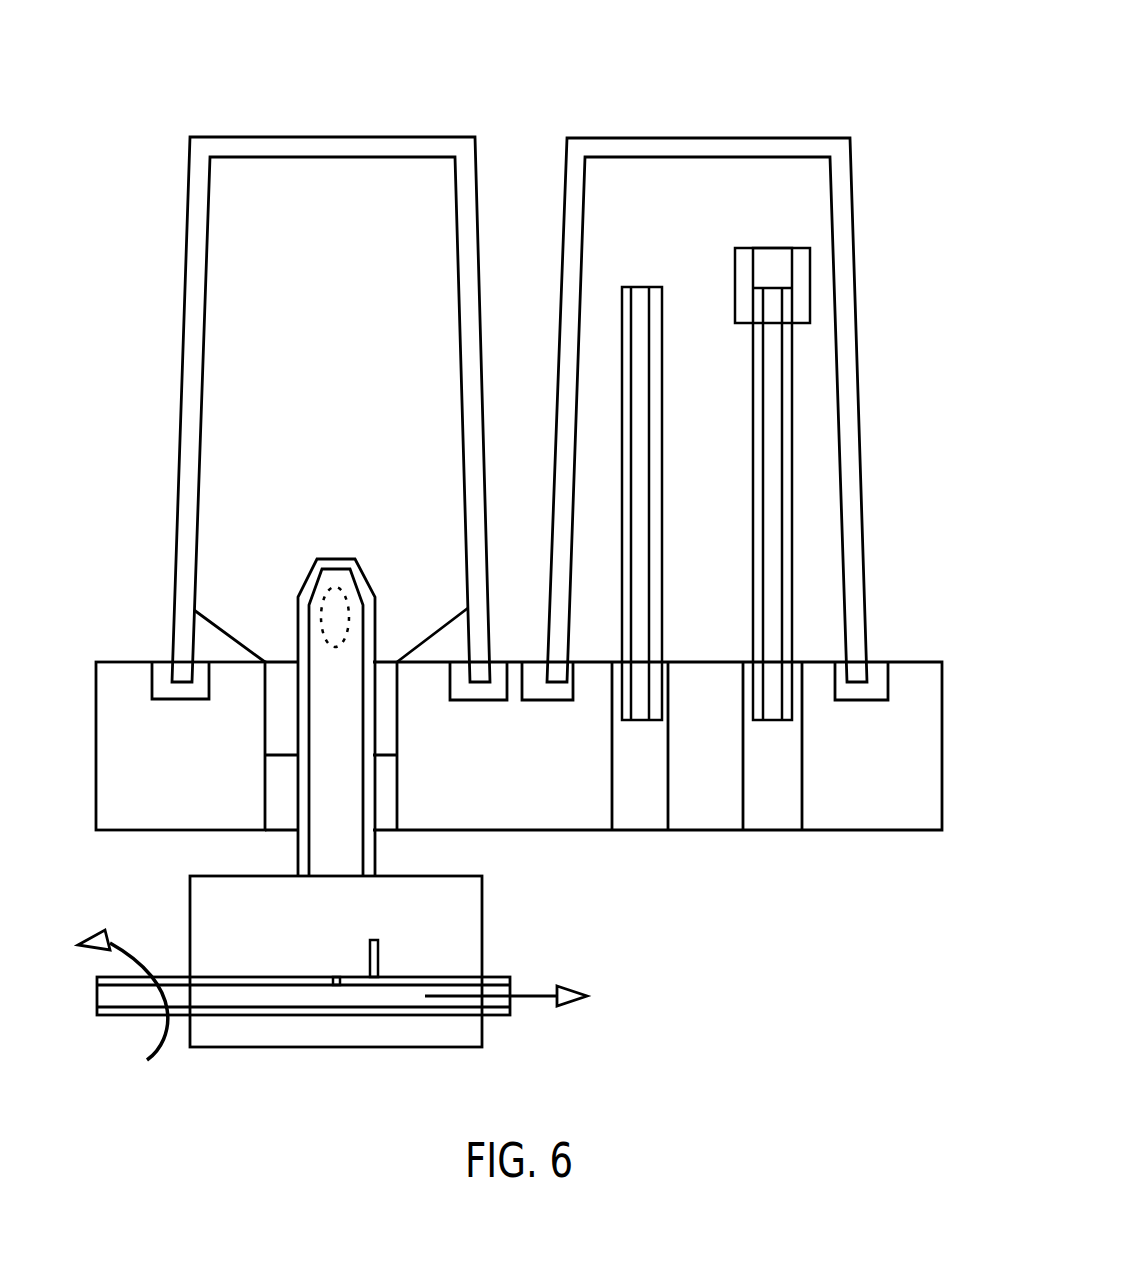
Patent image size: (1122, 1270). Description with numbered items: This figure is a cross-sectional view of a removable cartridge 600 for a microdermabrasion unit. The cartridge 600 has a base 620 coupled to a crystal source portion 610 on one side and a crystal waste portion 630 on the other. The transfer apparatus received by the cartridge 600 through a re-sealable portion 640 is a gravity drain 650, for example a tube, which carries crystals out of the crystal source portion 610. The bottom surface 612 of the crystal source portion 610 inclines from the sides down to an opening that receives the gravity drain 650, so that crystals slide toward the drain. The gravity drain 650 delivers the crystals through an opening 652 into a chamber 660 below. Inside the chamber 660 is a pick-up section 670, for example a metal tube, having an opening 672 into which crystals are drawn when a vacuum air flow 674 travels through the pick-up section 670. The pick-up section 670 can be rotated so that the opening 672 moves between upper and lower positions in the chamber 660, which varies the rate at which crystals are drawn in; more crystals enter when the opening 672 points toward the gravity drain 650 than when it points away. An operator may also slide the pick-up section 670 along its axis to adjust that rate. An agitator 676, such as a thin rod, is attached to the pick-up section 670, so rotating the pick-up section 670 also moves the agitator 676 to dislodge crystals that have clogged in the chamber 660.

The removable cartridge 600 is at (739, 60).
The crystal source portion 610 is at (253, 137).
The bottom surface 612 is at (428, 640).
The base 620 is at (145, 832).
The crystal waste portion 630 is at (620, 137).
The re-sealable portion 640 is at (383, 757).
The gravity drain 650 is at (360, 562).
The opening 652 is at (322, 600).
The chamber 660 is at (238, 1048).
The pick-up section 670 is at (500, 1017).
The opening 672 is at (337, 978).
The vacuum air flow 674 is at (530, 987).
The agitator 676 is at (380, 957).